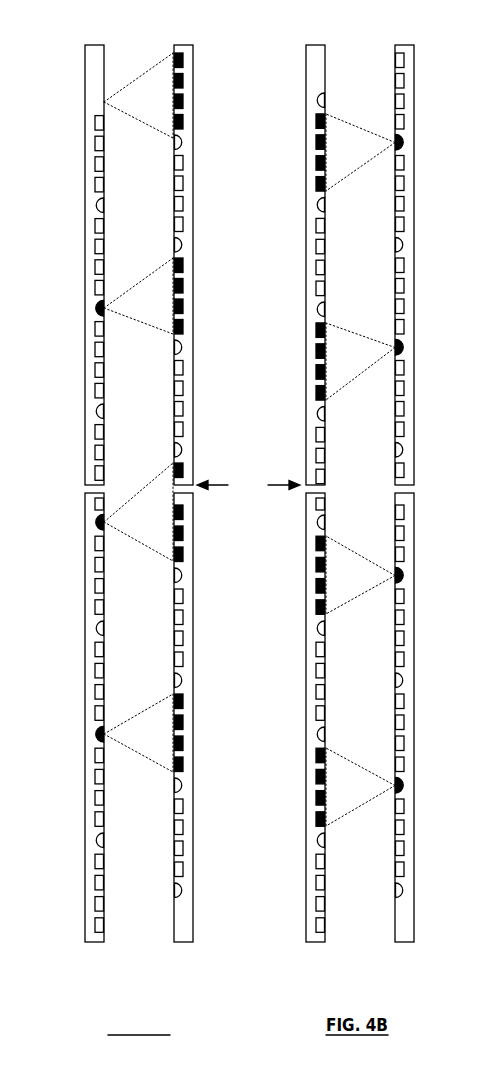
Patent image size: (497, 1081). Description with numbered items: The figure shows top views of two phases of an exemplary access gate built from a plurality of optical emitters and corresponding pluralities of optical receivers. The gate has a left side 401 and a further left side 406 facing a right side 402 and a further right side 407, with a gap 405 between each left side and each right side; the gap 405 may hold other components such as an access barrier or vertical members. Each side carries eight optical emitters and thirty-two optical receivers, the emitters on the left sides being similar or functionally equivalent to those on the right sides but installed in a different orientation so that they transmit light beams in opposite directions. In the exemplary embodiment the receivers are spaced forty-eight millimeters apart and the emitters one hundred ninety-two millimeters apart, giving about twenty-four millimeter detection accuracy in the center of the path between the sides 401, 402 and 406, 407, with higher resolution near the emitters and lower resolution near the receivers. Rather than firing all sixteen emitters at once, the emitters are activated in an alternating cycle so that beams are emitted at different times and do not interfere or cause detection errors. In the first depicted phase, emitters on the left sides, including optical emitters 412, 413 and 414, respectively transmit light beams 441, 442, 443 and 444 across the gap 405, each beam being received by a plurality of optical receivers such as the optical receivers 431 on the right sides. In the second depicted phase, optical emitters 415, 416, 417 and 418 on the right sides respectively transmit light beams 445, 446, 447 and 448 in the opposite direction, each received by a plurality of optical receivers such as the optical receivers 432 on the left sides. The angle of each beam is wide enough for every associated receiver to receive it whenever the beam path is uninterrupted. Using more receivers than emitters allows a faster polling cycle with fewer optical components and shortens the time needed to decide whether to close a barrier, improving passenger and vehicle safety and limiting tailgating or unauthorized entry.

In FIG. 4A, the left side 401 is at (93, 45).
In FIG. 4B, the left side 401 is at (285, 252).
In FIG. 4A, the right side 402 is at (194, 252).
In FIG. 4B, the right side 402 is at (404, 45).
In FIG. 4A, the gap 405 is at (248, 486).
In FIG. 4A, the left side 406 is at (96, 943).
In FIG. 4B, the left side 406 is at (316, 943).
In FIG. 4A, the right side 407 is at (110, 544).
In FIG. 4B, the right side 407 is at (405, 943).
In FIG. 4A, the optical emitter 412 is at (91, 308).
In FIG. 4A, the optical emitter 413 is at (91, 522).
In FIG. 4A, the optical emitter 414 is at (91, 734).
In FIG. 4B, the optical emitter 415 is at (409, 143).
In FIG. 4B, the optical emitter 416 is at (409, 348).
In FIG. 4B, the optical emitter 417 is at (409, 577).
In FIG. 4B, the optical emitter 418 is at (409, 784).
In FIG. 4A, the optical receivers 431 is at (184, 85).
In FIG. 4B, the optical receivers 432 is at (318, 166).
In FIG. 4A, the light beam 441 is at (164, 111).
In FIG. 4A, the light beam 442 is at (164, 316).
In FIG. 4A, the light beam 443 is at (164, 531).
In FIG. 4A, the light beam 444 is at (164, 751).
In FIG. 4B, the light beam 445 is at (365, 163).
In FIG. 4B, the light beam 446 is at (365, 361).
In FIG. 4B, the light beam 447 is at (365, 587).
In FIG. 4B, the light beam 448 is at (365, 793).